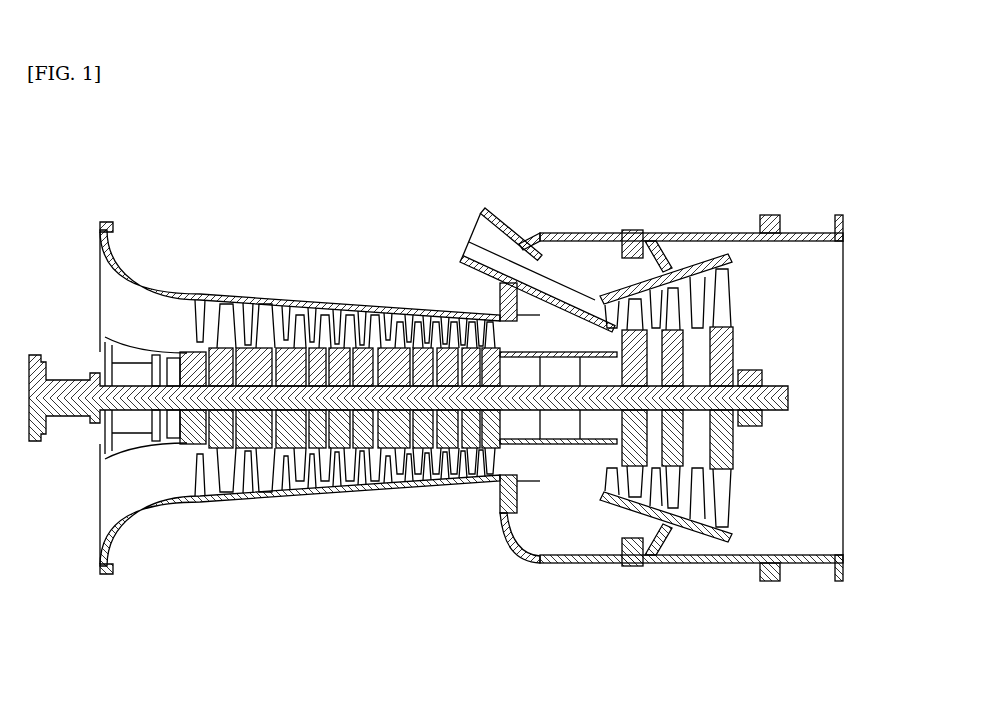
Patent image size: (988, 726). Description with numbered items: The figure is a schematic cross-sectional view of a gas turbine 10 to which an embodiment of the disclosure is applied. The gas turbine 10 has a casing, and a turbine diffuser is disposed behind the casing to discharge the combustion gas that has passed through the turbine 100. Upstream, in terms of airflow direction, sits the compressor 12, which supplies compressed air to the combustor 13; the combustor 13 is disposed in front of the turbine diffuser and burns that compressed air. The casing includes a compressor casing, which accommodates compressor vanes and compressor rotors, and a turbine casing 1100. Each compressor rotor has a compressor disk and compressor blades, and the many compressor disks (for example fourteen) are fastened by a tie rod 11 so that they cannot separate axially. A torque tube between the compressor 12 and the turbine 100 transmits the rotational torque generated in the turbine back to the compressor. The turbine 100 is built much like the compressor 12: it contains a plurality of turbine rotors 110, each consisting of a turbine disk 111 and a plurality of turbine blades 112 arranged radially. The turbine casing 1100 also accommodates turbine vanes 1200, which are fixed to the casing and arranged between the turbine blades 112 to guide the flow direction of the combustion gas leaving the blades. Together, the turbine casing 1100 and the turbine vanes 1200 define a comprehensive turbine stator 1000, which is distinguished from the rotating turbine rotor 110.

The gas turbine 10 is at (178, 161).
The tie rod 11 is at (233, 440).
The compressor 12 is at (224, 324).
The combustor 13 is at (498, 204).
The turbine 100 is at (748, 317).
The turbine rotor 110 is at (693, 625).
The turbine disk 111 is at (613, 560).
The turbine blade 112 is at (689, 560).
The turbine stator 1000 is at (693, 167).
The turbine casing 1100 is at (630, 258).
The turbine vane 1200 is at (668, 275).